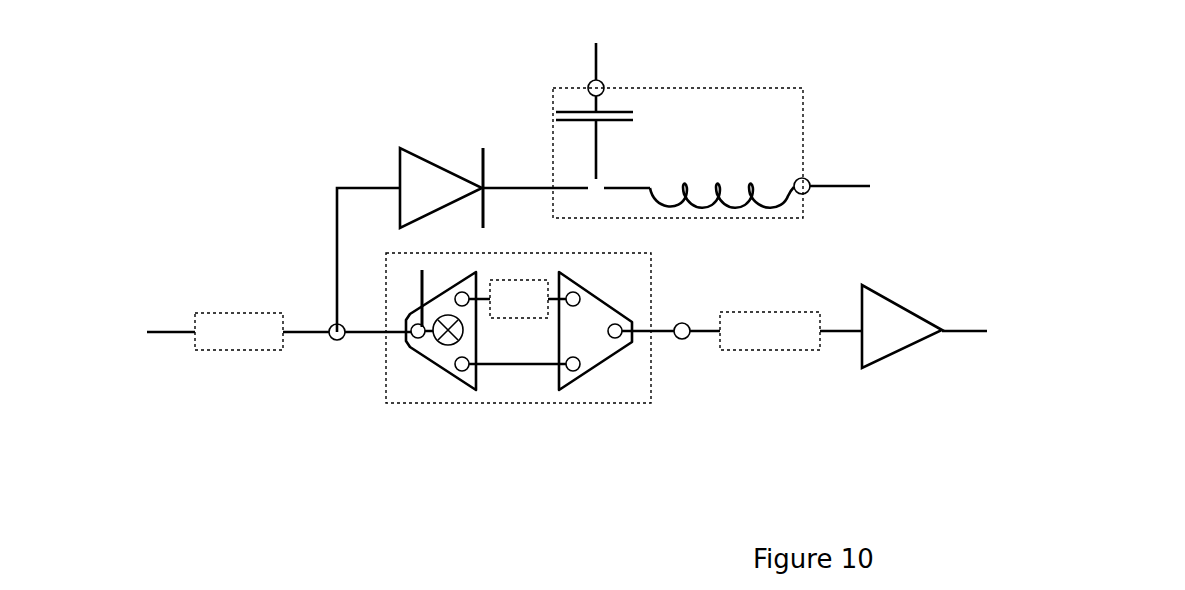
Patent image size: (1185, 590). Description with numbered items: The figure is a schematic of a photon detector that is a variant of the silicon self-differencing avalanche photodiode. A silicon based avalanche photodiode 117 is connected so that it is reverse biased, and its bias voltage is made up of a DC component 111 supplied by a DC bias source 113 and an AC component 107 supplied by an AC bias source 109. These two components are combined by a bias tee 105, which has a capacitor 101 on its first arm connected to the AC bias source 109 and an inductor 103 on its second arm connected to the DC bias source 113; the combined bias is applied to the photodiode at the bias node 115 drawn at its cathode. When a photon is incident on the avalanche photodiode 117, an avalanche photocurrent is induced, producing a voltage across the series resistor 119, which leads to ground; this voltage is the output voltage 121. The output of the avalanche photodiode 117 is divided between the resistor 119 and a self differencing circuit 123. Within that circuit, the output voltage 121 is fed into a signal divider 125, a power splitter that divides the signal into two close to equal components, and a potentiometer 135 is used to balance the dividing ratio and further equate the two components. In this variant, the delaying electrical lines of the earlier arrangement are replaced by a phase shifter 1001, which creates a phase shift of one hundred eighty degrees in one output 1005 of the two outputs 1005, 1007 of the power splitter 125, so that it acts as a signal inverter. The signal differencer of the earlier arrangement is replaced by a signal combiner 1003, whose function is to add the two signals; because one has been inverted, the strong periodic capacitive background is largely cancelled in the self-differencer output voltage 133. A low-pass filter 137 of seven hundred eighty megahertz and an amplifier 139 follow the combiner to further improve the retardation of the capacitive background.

The capacitor 101 is at (555, 112).
The inductor 103 is at (733, 214).
The bias tee 105 is at (678, 153).
The AC component V_AC 107 is at (620, 79).
The AC bias source 109 is at (626, 40).
The DC component V_DC 111 is at (822, 199).
The DC bias source 113 is at (926, 186).
The APD bias node Vapd 115 is at (513, 188).
The silicon based avalanche photodiode 117 is at (385, 172).
The resistor 119 is at (237, 362).
The output voltage V_out 121 is at (317, 383).
The self differencing circuit 123 is at (518, 328).
The signal divider 125 is at (417, 354).
The self-differencer output voltage V_sd 133 is at (682, 330).
The potentiometer 135 is at (437, 313).
The low-pass filter 137 is at (778, 356).
The amplifier 139 is at (902, 339).
The phase shifter 1001 is at (519, 306).
The signal combiner 1003 is at (594, 366).
The first output of the power splitter 1005 is at (481, 312).
The second output of the power splitter 1007 is at (477, 376).